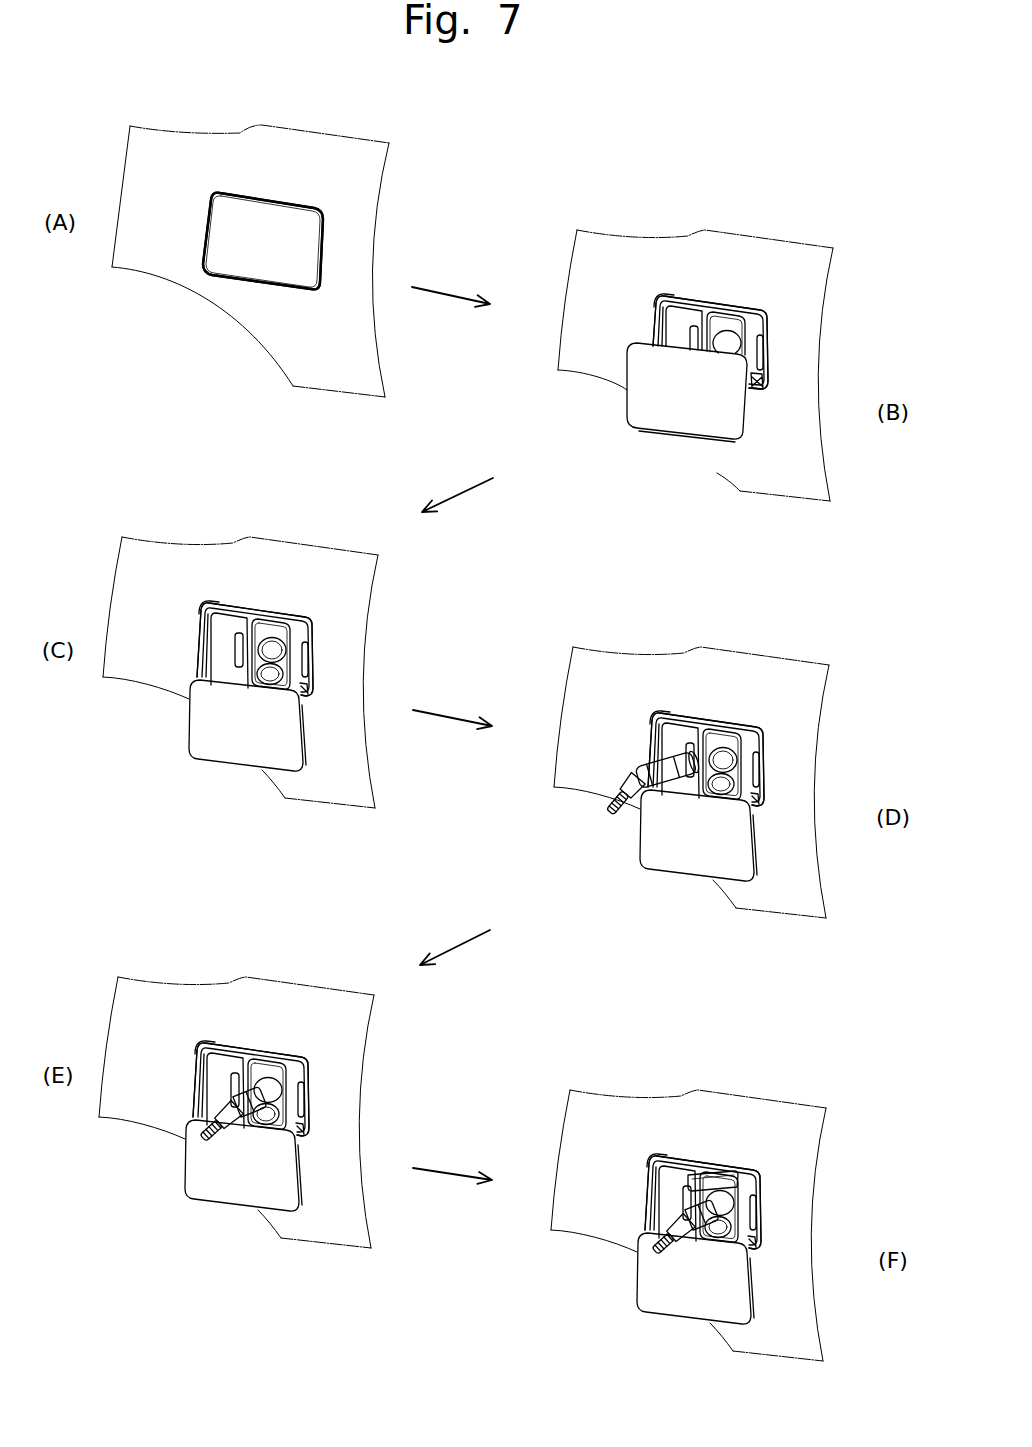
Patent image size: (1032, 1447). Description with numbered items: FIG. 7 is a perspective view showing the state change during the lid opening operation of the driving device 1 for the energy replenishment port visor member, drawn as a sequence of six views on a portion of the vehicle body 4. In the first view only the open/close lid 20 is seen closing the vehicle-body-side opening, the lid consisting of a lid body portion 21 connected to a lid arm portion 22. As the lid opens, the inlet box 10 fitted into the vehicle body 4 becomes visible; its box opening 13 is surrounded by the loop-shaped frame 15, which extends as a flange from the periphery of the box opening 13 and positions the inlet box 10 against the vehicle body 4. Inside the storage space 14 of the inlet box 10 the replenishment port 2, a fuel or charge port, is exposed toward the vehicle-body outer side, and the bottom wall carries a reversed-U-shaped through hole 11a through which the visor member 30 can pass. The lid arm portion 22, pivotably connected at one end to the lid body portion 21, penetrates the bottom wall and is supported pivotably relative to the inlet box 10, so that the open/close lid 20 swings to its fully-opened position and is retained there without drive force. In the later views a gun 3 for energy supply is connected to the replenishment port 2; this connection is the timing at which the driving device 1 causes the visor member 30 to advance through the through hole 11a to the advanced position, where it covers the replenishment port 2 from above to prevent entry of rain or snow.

The driving device 1 is at (187, 268).
The replenishment port 2 is at (687, 370).
The gun 3 is at (458, 1064).
The vehicle body 4 is at (200, 145).
The inlet box 10 is at (307, 636).
The through hole 11a is at (300, 632).
The box opening 13 is at (200, 605).
The storage space 14 is at (228, 627).
The frame 15 is at (660, 318).
The open/close lid 20 is at (240, 262).
The lid body portion 21 is at (643, 407).
The lid arm portion 22 is at (750, 370).
The visor member 30 is at (739, 1124).